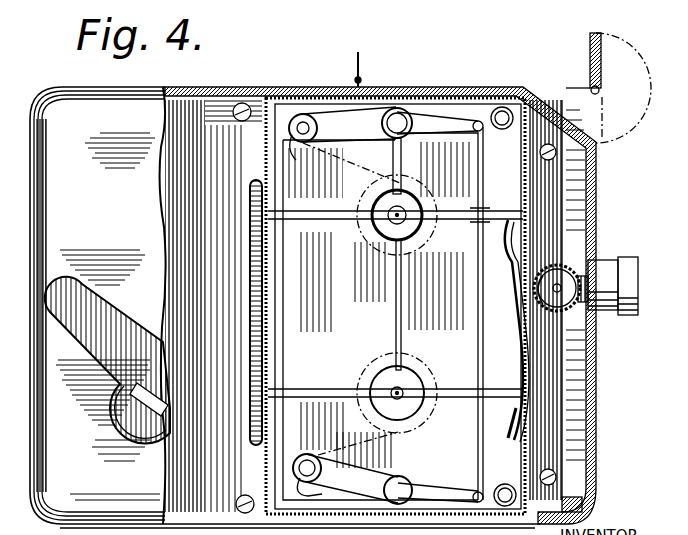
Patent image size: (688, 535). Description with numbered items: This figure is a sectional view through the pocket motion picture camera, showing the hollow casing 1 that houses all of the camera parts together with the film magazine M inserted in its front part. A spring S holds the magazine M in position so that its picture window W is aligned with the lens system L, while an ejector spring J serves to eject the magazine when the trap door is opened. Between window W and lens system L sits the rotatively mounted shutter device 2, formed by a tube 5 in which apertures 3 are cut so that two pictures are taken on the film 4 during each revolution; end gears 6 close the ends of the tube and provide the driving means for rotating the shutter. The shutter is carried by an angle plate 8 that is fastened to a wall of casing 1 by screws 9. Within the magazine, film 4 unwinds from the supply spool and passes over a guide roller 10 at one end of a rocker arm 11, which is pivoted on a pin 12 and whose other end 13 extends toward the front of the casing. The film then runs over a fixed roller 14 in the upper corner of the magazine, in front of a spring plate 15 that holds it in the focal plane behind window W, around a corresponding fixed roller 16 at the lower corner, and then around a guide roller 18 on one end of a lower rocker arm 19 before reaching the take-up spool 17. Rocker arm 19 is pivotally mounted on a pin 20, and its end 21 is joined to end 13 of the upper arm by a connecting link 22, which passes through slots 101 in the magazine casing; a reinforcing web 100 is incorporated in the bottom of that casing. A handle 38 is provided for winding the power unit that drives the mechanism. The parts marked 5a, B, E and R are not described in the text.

The hollow casing 1 is at (437, 87).
The shutter device 2 is at (561, 316).
The apertures 3 is at (598, 310).
The film 4 is at (491, 119).
The tube 5 is at (576, 266).
The rod 5a is at (430, 208).
The end gears 6 is at (551, 265).
The angle plate 8 is at (558, 428).
The screws 9 is at (592, 142).
The guide roller 10 is at (298, 145).
The rocker arm 11 is at (352, 137).
The pin 12 is at (403, 139).
The end of rocker arm 13 is at (452, 137).
The fixed roller 14 is at (480, 134).
The spring plate 15 is at (470, 268).
The fixed roller 16 is at (503, 492).
The take-up spool 17 is at (375, 388).
The guide roller 18 is at (318, 496).
The rocker arm 19 is at (367, 478).
The pin 20 is at (412, 482).
The end of rocker arm 21 is at (440, 490).
The connecting link 22 is at (430, 456).
The handle 38 is at (98, 340).
The reinforcing web 100 is at (304, 232).
The slots 101 is at (420, 236).
The bar B is at (590, 40).
The pin E is at (354, 66).
The ejector spring J is at (387, 86).
The pivot R is at (570, 88).
The lens system L is at (622, 258).
The film magazine M is at (316, 262).
The spring S is at (233, 312).
The picture window W is at (526, 286).